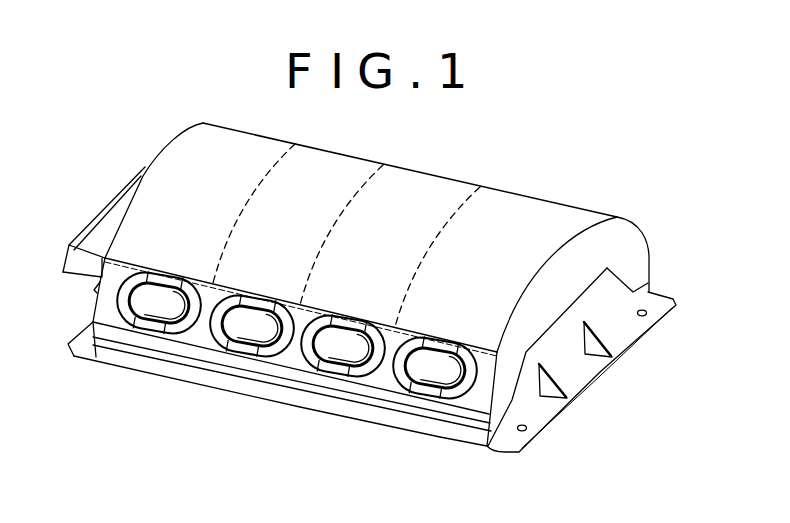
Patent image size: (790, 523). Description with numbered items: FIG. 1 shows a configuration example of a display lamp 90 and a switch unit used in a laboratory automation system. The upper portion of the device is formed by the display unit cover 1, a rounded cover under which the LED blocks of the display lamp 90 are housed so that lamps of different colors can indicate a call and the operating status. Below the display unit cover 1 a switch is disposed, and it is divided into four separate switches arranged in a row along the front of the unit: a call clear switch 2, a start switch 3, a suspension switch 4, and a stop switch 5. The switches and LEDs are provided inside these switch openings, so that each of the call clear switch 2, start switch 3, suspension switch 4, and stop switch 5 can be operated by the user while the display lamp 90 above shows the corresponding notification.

The display unit cover 1 is at (378, 203).
The call clear switch 2 is at (155, 300).
The start switch 3 is at (245, 323).
The suspension switch 4 is at (340, 343).
The stop switch 5 is at (428, 365).
The display lamp 90 is at (503, 159).